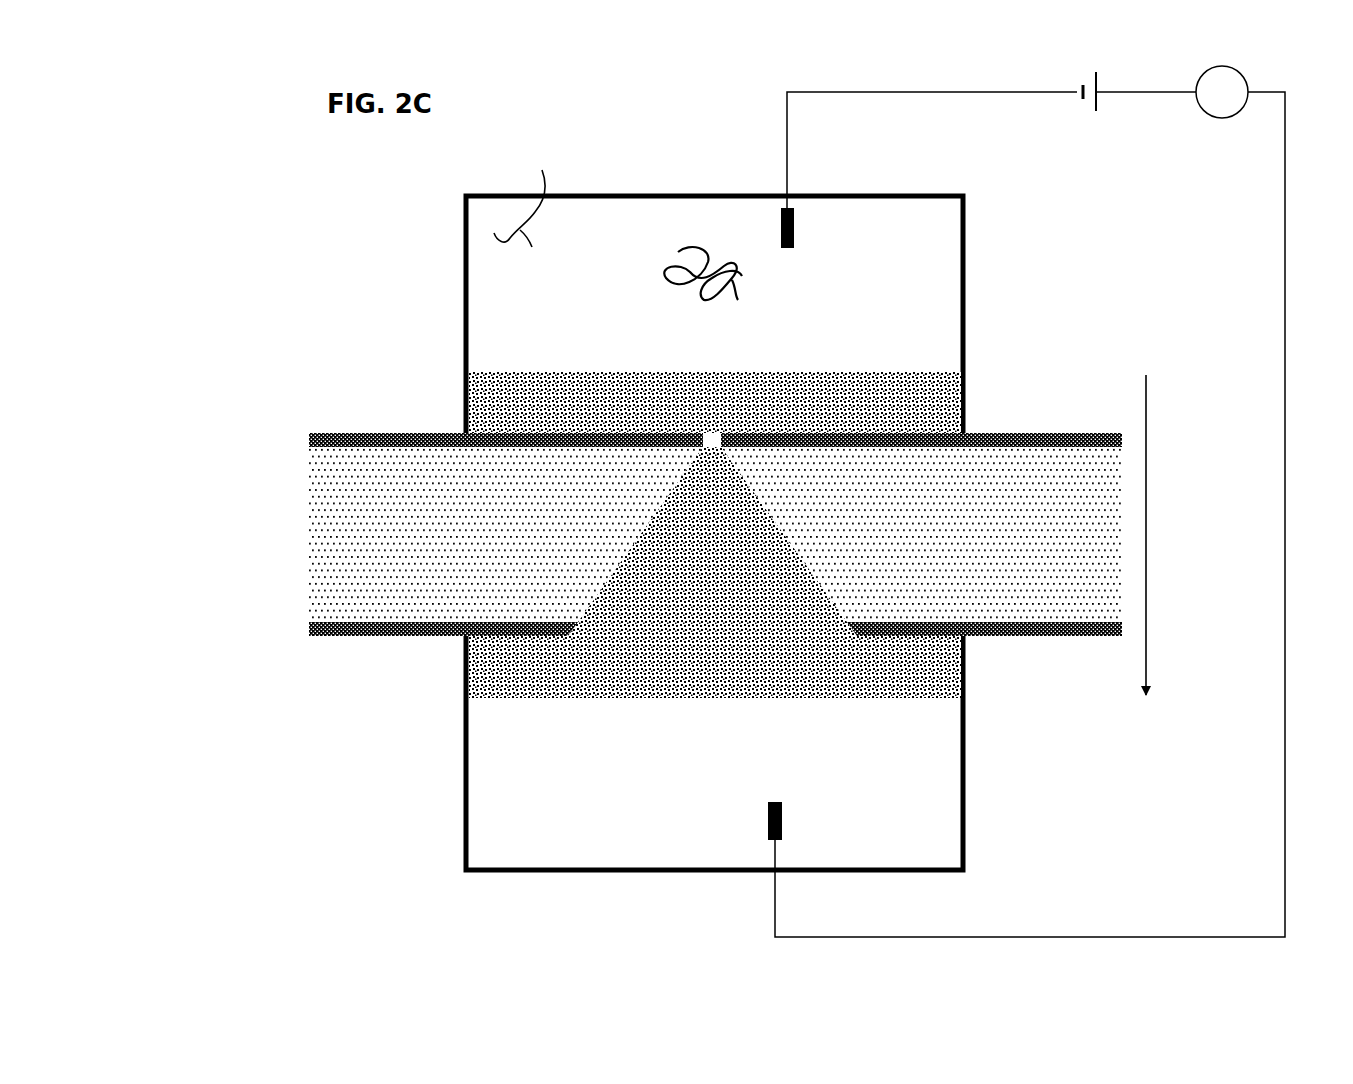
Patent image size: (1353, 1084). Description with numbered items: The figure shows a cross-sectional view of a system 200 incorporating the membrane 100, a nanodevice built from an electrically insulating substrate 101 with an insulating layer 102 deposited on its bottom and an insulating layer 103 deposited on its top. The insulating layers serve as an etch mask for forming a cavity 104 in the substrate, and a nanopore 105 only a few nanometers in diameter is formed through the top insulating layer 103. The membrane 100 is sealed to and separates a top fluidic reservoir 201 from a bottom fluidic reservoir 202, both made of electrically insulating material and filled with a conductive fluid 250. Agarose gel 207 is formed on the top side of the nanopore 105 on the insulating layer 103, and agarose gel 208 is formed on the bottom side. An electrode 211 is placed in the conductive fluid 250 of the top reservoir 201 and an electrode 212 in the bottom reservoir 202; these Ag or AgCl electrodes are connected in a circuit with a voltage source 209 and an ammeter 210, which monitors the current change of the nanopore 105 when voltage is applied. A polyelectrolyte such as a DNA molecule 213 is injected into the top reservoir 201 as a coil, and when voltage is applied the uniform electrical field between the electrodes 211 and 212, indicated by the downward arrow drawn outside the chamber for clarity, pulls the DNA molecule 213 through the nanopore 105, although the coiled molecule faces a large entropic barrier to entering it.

The membrane 100 is at (190, 407).
The substrate 101 is at (320, 534).
The insulating layer 102 is at (309, 627).
The insulating layer 103 is at (309, 442).
The cavity 104 is at (782, 539).
The nanopore 105 is at (714, 428).
The system 200 is at (260, 135).
The top fluidic reservoir 201 is at (952, 277).
The bottom fluidic reservoir 202 is at (953, 805).
The agarose gel 207 is at (515, 395).
The agarose gel 208 is at (508, 680).
The voltage source 209 is at (1104, 122).
The ammeter 210 is at (1219, 130).
The electrode 211 is at (802, 220).
The electrode 212 is at (788, 785).
The DNA molecule 213 is at (669, 234).
The conductive fluid 250 is at (524, 193).